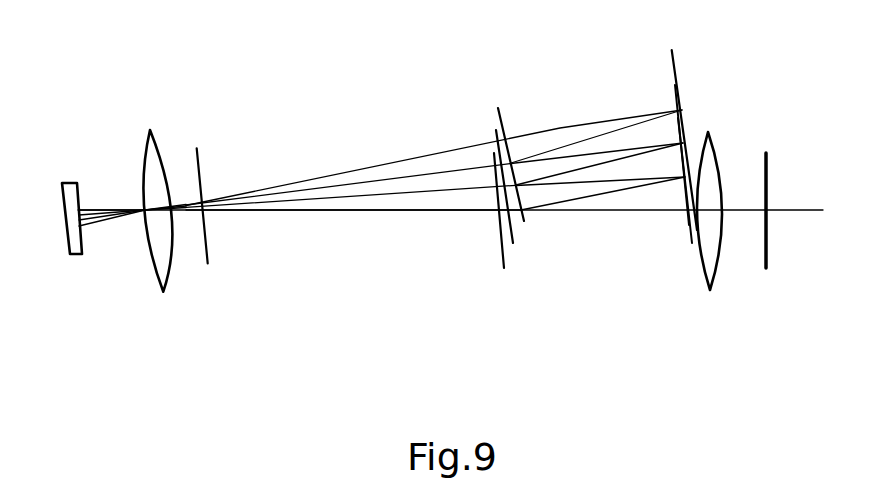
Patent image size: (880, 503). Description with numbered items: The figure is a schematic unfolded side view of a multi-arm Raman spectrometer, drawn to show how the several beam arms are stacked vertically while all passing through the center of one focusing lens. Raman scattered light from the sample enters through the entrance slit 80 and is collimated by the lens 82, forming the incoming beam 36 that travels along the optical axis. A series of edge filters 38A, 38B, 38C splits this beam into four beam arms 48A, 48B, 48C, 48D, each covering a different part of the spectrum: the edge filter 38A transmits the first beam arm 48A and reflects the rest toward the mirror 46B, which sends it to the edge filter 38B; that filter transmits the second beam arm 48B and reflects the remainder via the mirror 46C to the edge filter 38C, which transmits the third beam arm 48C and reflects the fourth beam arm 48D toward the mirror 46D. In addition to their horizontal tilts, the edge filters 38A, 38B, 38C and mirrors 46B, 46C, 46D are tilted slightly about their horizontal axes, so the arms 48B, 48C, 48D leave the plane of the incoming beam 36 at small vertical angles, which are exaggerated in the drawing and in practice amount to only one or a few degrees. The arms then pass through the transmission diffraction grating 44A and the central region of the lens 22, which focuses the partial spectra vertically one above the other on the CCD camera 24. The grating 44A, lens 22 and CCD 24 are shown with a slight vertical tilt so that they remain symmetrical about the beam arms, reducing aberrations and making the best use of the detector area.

The lens 22 is at (148, 143).
The CCD camera 24 is at (65, 240).
The incoming beam 36 is at (628, 212).
The edge filter 38A is at (502, 257).
The edge filter 38B is at (514, 232).
The edge filter 38C is at (505, 118).
The transmission diffraction grating 44A is at (203, 158).
The mirror 46B is at (690, 220).
The mirror 46C is at (675, 90).
The mirror 46D is at (675, 63).
The first beam arm 48A is at (303, 212).
The second beam arm 48B is at (368, 197).
The third beam arm 48C is at (322, 187).
The fourth beam arm 48D is at (392, 165).
The entrance slit 80 is at (768, 192).
The lens 82 is at (712, 278).